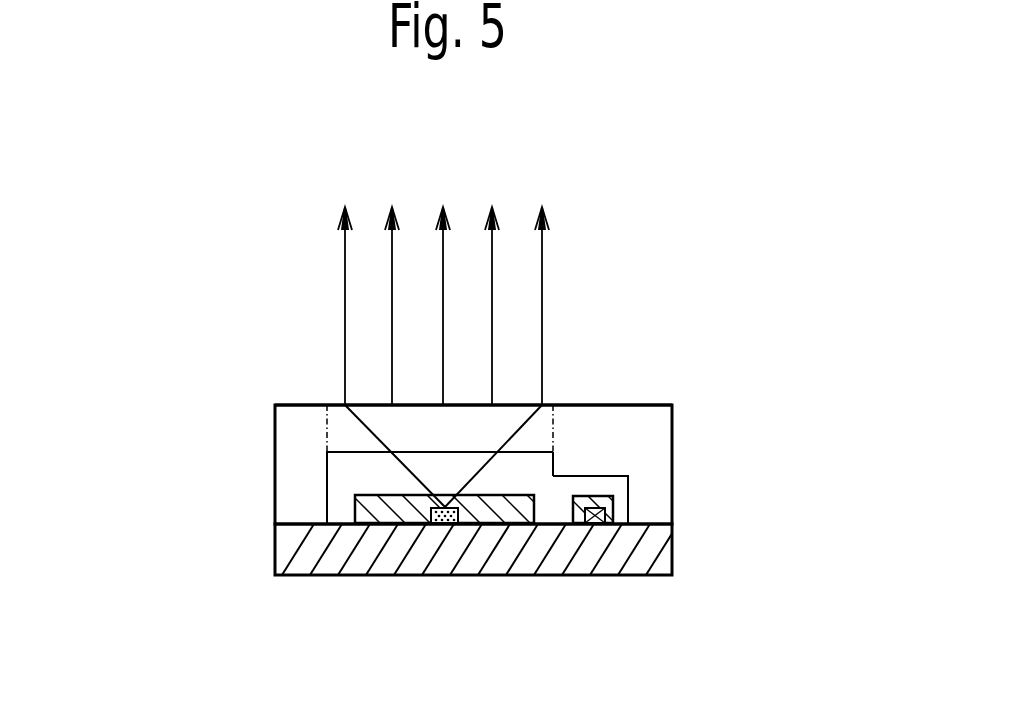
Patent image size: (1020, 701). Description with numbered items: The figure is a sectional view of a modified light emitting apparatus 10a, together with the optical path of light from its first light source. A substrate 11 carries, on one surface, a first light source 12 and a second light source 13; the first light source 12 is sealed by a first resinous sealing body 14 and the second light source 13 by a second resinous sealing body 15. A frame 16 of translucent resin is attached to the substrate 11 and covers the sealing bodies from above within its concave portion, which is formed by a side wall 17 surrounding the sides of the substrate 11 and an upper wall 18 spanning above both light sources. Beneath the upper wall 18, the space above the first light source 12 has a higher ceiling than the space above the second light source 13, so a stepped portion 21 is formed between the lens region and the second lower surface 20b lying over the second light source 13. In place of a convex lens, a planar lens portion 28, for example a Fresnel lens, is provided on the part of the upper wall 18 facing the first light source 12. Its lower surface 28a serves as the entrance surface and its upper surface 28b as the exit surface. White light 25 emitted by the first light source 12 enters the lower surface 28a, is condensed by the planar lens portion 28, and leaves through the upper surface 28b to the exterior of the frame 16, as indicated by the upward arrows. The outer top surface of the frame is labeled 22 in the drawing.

The light emitting apparatus 10a is at (667, 287).
The substrate 11 is at (672, 560).
The first light source 12 is at (446, 522).
The second light source 13 is at (597, 520).
The first resinous sealing body 14 is at (371, 513).
The second resinous sealing body 15 is at (573, 507).
The frame 16 is at (247, 423).
The side wall 17 is at (672, 443).
The upper wall 18 is at (565, 423).
The second lower surface 20b is at (628, 492).
The stepped portion 21 is at (555, 467).
The upper surface 22 is at (652, 405).
The white light 25 is at (543, 192).
The planar lens portion 28 is at (385, 415).
The lower surface 28a is at (366, 452).
The upper surface 28b is at (500, 412).